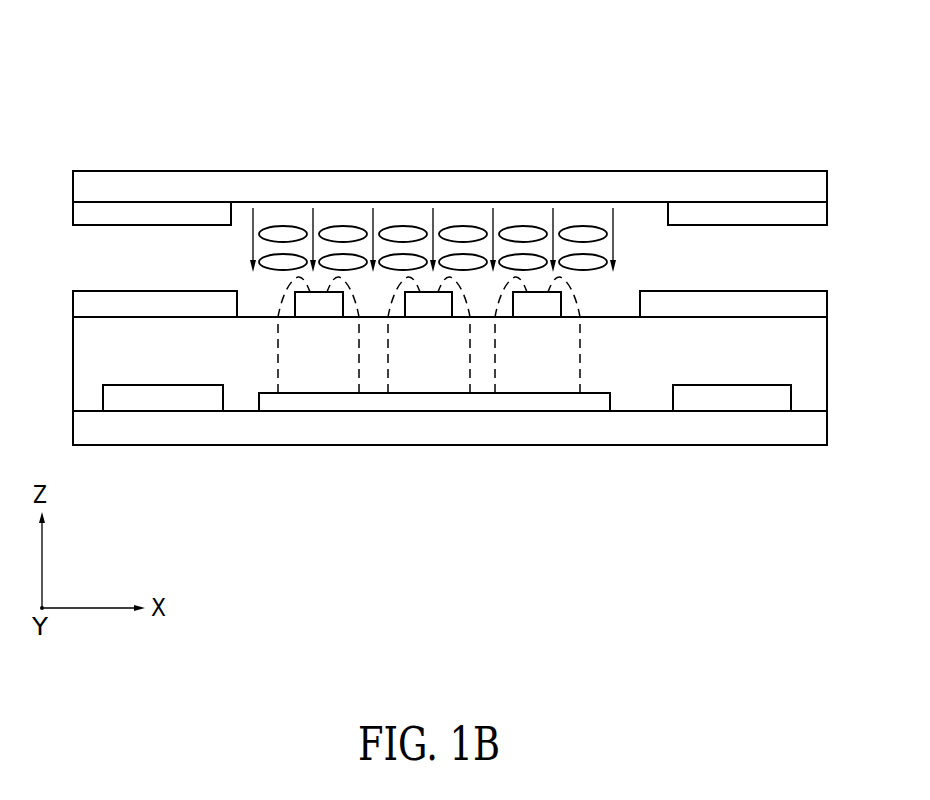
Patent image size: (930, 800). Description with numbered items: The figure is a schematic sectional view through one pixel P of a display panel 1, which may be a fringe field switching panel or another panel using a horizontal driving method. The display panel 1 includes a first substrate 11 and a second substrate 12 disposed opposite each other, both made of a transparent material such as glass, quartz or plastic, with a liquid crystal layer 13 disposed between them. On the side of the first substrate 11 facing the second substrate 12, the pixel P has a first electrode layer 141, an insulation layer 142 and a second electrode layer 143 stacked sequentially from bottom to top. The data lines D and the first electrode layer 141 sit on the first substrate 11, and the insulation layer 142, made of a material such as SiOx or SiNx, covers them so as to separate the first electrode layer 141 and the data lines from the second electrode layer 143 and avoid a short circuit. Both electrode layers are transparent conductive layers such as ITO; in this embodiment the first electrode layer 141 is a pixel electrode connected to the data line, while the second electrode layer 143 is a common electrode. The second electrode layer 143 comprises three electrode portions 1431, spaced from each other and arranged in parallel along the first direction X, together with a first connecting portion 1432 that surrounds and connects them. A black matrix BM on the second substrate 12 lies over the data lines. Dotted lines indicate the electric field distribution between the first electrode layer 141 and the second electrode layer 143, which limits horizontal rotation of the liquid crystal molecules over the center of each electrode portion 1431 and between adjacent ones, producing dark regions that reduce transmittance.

The display panel 1 is at (97, 48).
The first substrate 11 is at (80, 428).
The second substrate 12 is at (80, 186).
The liquid crystal layer 13 is at (131, 243).
The first electrode layer 141 is at (308, 403).
The insulation layer 142 is at (82, 357).
The second electrode layer 143 is at (60, 304).
The electrode portions 1431 is at (432, 312).
The first connecting portion 1432 is at (450, 304).
The pixel P is at (243, 213).